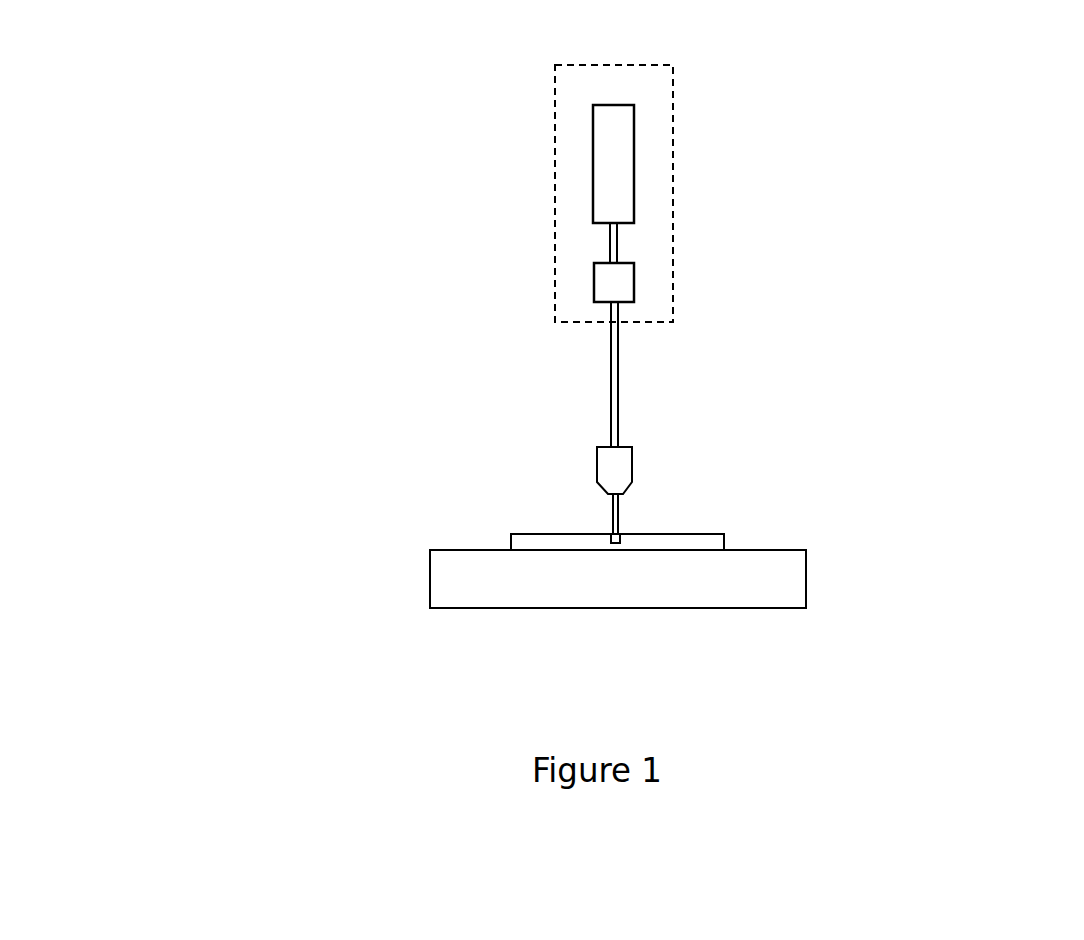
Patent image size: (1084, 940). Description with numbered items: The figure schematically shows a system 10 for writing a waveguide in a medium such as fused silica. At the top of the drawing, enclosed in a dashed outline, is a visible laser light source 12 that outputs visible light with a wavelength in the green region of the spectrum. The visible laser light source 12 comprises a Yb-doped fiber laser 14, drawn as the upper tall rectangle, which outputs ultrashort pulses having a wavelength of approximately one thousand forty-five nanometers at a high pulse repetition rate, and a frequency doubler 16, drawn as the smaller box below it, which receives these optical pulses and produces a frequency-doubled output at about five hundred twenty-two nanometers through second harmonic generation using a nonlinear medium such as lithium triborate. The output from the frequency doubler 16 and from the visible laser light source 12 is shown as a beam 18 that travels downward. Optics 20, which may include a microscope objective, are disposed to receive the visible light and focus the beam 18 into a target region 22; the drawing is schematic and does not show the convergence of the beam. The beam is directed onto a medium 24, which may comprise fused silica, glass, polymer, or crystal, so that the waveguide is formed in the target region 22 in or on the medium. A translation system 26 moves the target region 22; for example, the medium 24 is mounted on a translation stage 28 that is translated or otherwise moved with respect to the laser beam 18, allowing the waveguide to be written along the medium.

The system 10 is at (196, 124).
The visible laser light source 12 is at (552, 140).
The Yb-doped fiber laser 14 is at (634, 170).
The frequency doubler 16 is at (634, 280).
The beam 18 is at (613, 393).
The optics 20 is at (632, 472).
The target region 22 is at (622, 534).
The medium 24 is at (528, 538).
The translation system 26 is at (412, 509).
The translation stage 28 is at (778, 577).